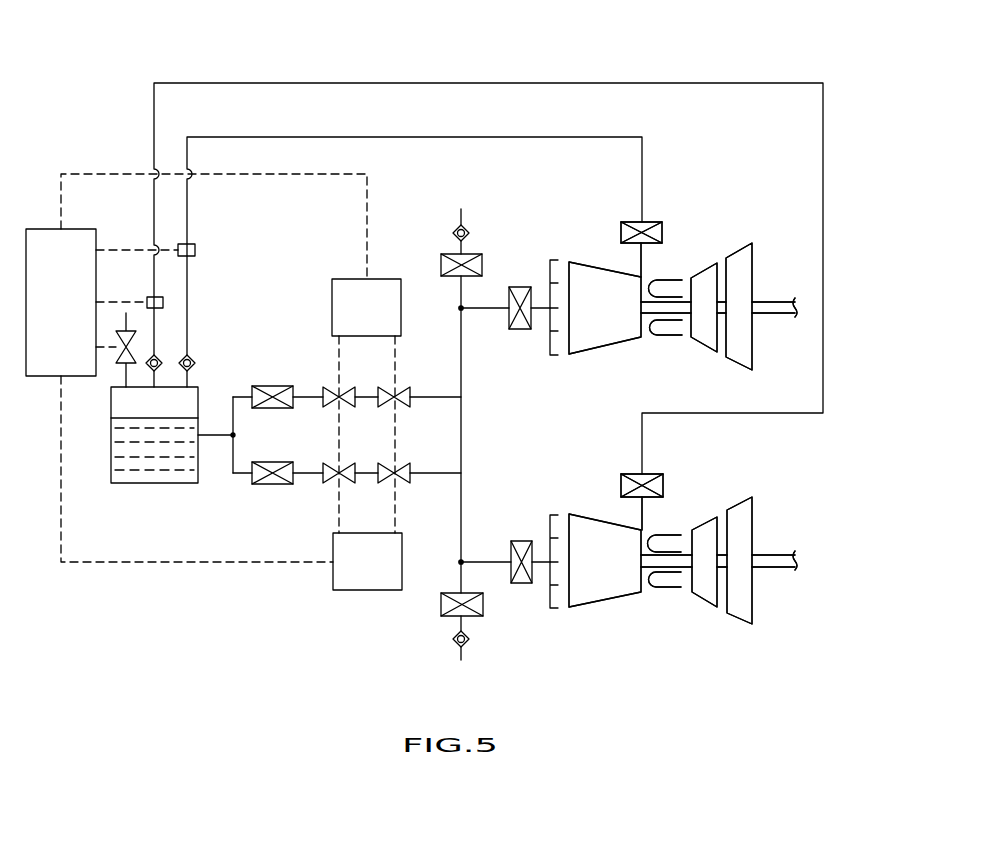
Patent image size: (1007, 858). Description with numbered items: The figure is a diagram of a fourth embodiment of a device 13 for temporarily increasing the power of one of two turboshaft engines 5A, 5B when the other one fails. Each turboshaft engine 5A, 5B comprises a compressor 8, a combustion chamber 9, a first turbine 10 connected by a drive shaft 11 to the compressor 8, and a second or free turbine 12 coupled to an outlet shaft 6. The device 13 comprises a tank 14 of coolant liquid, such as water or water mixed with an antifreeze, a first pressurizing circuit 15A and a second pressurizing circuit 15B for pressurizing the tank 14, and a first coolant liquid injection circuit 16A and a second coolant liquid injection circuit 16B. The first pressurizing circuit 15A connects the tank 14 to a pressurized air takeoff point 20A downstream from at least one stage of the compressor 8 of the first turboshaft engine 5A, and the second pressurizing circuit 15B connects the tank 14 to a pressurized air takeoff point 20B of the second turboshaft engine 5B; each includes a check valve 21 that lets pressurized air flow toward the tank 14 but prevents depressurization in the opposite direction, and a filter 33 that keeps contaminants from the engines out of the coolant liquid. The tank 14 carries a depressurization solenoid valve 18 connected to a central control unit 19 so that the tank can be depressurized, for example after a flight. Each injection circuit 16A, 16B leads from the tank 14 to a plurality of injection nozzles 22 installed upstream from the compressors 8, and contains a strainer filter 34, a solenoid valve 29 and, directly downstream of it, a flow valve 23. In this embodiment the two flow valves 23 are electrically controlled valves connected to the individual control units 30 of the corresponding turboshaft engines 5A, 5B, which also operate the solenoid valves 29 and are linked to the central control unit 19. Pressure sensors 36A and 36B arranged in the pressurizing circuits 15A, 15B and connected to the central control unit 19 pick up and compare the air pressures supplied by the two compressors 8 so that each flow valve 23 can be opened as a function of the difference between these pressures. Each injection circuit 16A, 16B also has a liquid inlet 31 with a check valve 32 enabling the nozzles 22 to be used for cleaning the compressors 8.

The turboshaft engine 5A is at (708, 204).
The turboshaft engine 5B is at (708, 479).
The outlet shaft 6 is at (791, 313).
The compressor 8 is at (610, 317).
The combustion chamber 9 is at (666, 335).
The first turbine 10 is at (701, 345).
The drive shaft 11 is at (647, 316).
The second turbine 12 is at (741, 257).
The device for temporarily increasing power 13 is at (250, 511).
The tank 14 is at (153, 484).
The first pressurizing circuit 15A is at (260, 136).
The second pressurizing circuit 15B is at (260, 83).
The first coolant liquid injection circuit 16A is at (238, 397).
The second coolant liquid injection circuit 16B is at (236, 473).
The depressurization solenoid valve 18 is at (116, 339).
The central control unit 19 is at (75, 309).
The pressurized air takeoff point 20A is at (643, 281).
The pressurized air takeoff point 20B is at (643, 535).
The check valve 21 is at (158, 354).
The injection nozzles 22 is at (551, 259).
The flow valve 23 is at (394, 407).
The solenoid valve 29 is at (339, 407).
The individual control unit 30 is at (380, 318).
The liquid inlet 31 is at (461, 211).
The check valve 32 is at (469, 233).
The filter 33 is at (621, 232).
The strainer filter 34 is at (272, 408).
The pressure sensor 36A is at (195, 250).
The pressure sensor 36B is at (147, 300).